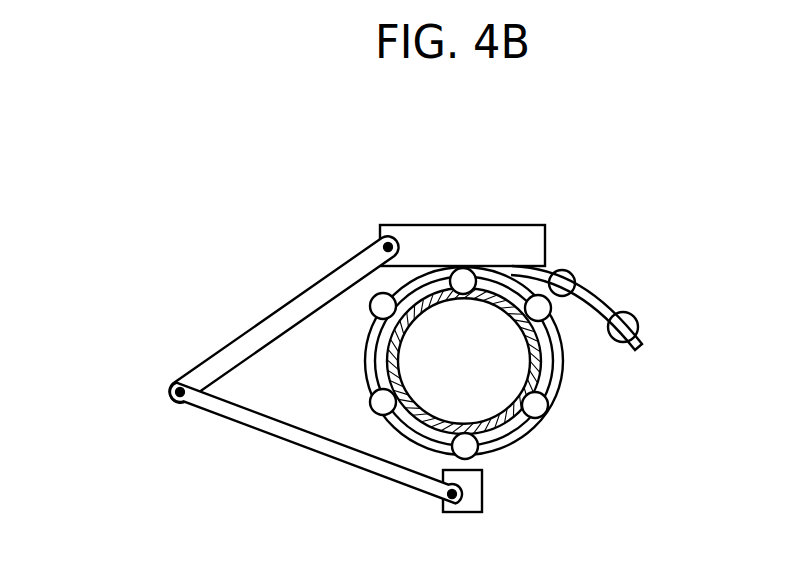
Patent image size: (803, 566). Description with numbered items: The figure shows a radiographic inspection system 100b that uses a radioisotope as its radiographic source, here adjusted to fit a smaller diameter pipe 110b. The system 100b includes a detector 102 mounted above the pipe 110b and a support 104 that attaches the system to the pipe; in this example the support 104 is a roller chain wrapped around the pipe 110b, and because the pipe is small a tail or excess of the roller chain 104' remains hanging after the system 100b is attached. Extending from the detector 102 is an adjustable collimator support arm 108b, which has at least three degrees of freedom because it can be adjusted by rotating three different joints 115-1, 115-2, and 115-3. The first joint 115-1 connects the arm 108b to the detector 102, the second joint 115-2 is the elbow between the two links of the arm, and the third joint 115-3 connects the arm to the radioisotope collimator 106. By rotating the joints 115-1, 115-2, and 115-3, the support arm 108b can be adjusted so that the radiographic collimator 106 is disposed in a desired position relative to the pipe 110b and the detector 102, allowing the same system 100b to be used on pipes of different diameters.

The radiographic inspection system 100b is at (128, 188).
The detector 102 is at (547, 251).
The support 104 is at (512, 377).
The roller chain tail 104' is at (610, 300).
The radioisotope collimator 106 is at (484, 498).
The collimator support arm 108b is at (256, 326).
The pipe 110b is at (507, 422).
The joint 115-1 is at (384, 246).
The joint 115-2 is at (177, 391).
The joint 115-3 is at (448, 496).